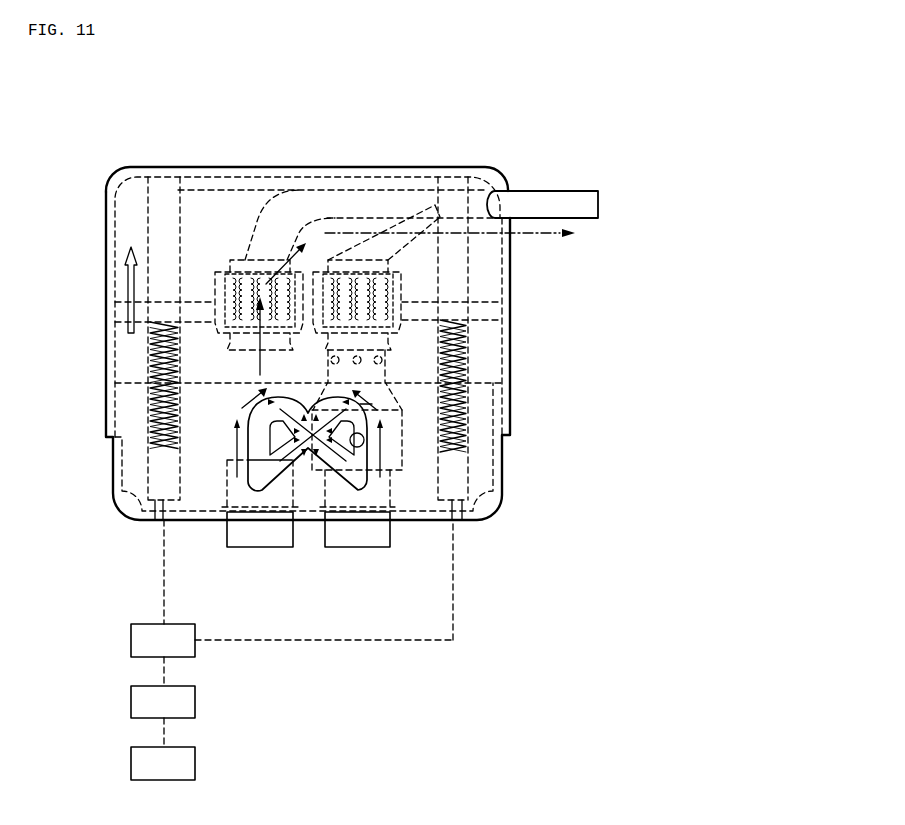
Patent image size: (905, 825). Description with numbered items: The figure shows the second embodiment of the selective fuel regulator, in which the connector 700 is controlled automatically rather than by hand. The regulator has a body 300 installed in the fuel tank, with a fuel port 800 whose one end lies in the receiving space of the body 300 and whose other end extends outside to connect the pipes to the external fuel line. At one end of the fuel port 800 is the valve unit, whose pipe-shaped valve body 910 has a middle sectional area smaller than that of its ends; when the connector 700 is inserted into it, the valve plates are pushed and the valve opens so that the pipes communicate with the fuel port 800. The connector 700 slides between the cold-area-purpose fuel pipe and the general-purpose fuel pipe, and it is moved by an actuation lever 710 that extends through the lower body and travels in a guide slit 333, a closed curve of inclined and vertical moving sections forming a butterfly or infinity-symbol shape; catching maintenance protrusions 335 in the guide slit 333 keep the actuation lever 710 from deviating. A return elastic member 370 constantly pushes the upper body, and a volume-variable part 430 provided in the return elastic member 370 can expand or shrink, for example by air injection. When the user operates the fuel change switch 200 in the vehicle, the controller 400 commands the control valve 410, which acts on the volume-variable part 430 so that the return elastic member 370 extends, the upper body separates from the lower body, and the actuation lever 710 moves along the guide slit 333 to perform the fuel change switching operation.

The body 300 is at (183, 152).
The fuel port 800 is at (566, 175).
The valve body 910 is at (415, 293).
The connector 700 is at (377, 397).
The catching maintenance protrusions 335 is at (367, 407).
The return elastic member 370 is at (463, 438).
The volume-variable part 430 is at (153, 518).
The guide slit 333 is at (285, 452).
The actuation lever 710 is at (357, 447).
The control valve 410 is at (131, 640).
The controller 400 is at (131, 701).
The fuel change switch 200 is at (131, 763).